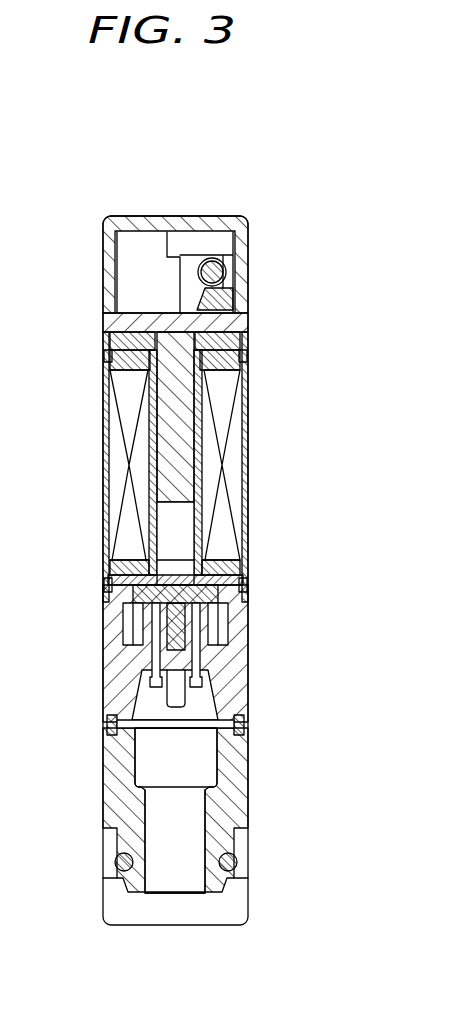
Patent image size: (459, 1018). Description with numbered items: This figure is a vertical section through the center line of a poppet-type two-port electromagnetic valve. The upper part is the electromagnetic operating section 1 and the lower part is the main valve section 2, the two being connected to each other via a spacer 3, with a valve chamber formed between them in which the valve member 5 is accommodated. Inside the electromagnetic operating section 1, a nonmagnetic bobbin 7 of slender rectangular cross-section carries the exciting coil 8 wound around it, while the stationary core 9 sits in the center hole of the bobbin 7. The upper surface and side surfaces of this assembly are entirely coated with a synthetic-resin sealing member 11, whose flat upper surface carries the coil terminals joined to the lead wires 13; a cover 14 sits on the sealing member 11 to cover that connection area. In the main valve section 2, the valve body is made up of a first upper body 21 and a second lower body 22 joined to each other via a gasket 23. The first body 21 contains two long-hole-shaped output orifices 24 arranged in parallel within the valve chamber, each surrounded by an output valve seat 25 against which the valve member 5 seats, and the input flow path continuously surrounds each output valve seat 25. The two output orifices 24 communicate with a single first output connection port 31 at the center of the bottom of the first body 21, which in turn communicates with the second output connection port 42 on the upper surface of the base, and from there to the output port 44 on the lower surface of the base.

The electromagnetic operating section 1 is at (207, 378).
The main valve section 2 is at (209, 793).
The spacer 3 is at (248, 592).
The valve member 5 is at (176, 594).
The bobbin 7 is at (135, 402).
The exciting coil 8 is at (125, 452).
The stationary core 9 is at (176, 441).
The sealing member 11 is at (244, 482).
The lead wires 13 is at (214, 270).
The cover 14 is at (147, 228).
The first body 21 is at (242, 667).
The second body 22 is at (242, 810).
The gasket 23 is at (244, 724).
The output orifices 24 is at (130, 625).
The output valve seats 25 is at (148, 562).
The first output connection port 31 is at (155, 703).
The second output connection port 42 is at (157, 757).
The output port 44 is at (173, 875).